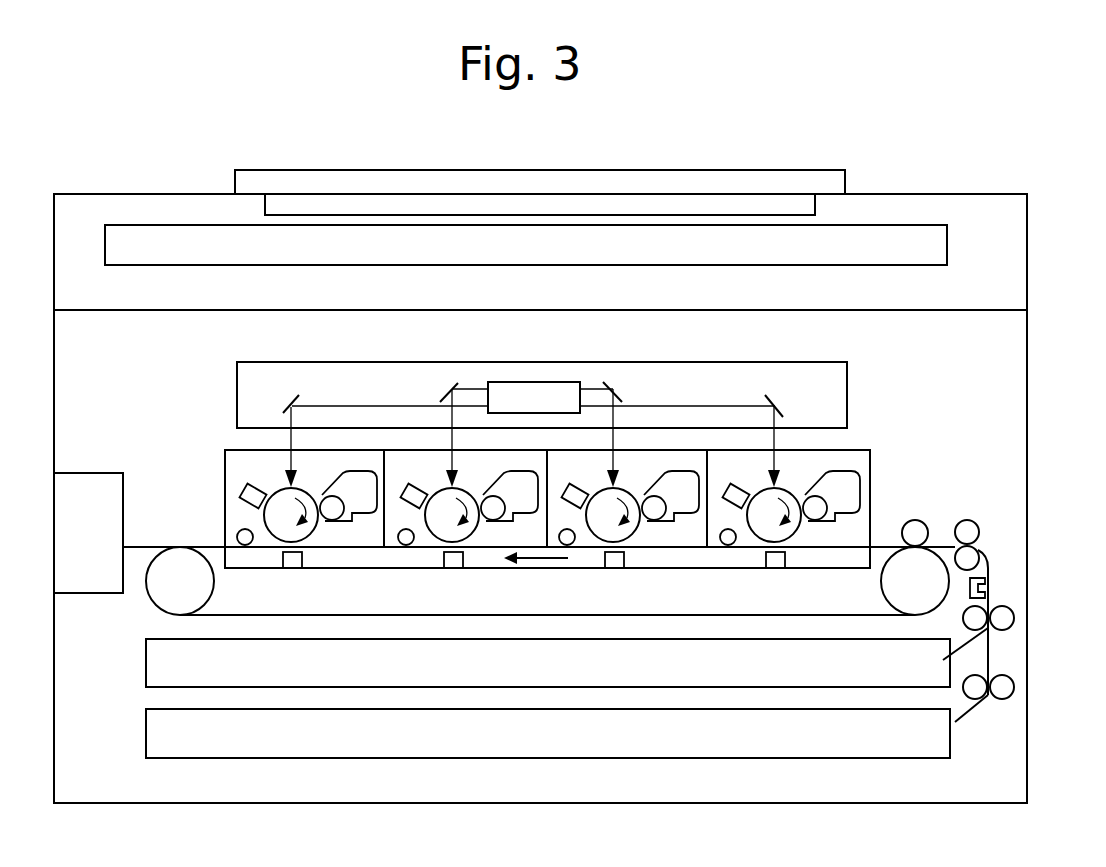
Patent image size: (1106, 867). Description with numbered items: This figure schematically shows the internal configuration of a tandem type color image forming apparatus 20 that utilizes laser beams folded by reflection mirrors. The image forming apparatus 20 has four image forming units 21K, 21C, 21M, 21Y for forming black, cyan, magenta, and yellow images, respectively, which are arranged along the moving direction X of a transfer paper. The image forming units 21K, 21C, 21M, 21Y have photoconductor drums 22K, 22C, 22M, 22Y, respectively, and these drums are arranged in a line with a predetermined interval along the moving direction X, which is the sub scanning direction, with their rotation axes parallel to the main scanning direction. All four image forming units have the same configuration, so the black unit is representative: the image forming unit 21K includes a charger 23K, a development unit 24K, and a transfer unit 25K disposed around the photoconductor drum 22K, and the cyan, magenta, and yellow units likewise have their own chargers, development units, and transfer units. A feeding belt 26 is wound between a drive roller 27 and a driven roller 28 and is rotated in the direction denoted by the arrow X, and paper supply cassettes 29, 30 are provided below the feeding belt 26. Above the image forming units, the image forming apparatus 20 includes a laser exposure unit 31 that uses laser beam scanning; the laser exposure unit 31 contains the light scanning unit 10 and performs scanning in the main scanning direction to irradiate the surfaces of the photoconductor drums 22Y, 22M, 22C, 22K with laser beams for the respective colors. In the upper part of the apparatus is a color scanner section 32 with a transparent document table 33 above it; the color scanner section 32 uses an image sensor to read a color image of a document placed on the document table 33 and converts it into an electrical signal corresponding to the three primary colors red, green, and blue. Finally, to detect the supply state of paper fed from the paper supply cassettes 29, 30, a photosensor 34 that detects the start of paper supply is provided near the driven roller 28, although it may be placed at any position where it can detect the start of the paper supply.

The light scanning unit 10 is at (563, 388).
The image forming apparatus 20 is at (1038, 457).
The image forming unit 21K is at (224, 470).
The image forming unit 21C is at (502, 540).
The image forming unit 21M is at (668, 538).
The image forming unit 21Y is at (838, 538).
The photoconductor drum 22K is at (280, 530).
The photoconductor drum 22C is at (443, 530).
The photoconductor drum 22M is at (603, 530).
The photoconductor drum 22Y is at (763, 530).
The charger 23K is at (247, 496).
The development unit 24K is at (336, 512).
The transfer unit 25K is at (292, 554).
The feeding belt 26 is at (882, 545).
The drive roller 27 is at (162, 585).
The driven roller 28 is at (946, 600).
The paper supply cassette 29 is at (548, 663).
The paper supply cassette 30 is at (548, 733).
The laser exposure unit 31 is at (848, 380).
The color scanner section 32 is at (876, 232).
The document table 33 is at (668, 203).
The photosensor 34 is at (988, 581).
The moving direction X is at (549, 567).